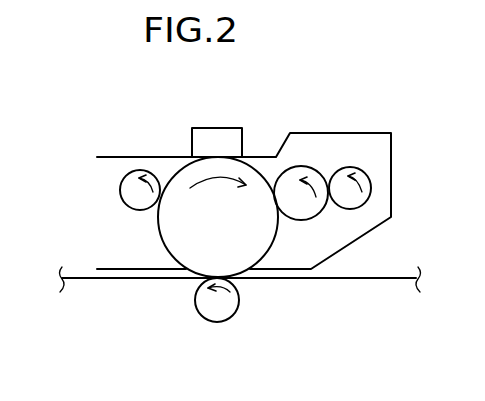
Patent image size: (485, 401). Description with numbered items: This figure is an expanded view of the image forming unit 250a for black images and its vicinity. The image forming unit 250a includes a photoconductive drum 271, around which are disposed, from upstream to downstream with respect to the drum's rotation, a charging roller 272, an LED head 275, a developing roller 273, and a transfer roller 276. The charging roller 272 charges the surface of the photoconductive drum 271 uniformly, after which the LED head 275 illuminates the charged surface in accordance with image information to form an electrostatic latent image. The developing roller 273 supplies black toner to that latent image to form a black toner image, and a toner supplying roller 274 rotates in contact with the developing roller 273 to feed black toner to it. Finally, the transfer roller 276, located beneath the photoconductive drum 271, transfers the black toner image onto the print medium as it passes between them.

The image forming unit 250a is at (290, 92).
The photoconductive drum 271 is at (168, 254).
The charging roller 272 is at (120, 192).
The developing roller 273 is at (305, 167).
The toner supplying roller 274 is at (361, 167).
The LED head 275 is at (207, 127).
The transfer roller 276 is at (217, 323).